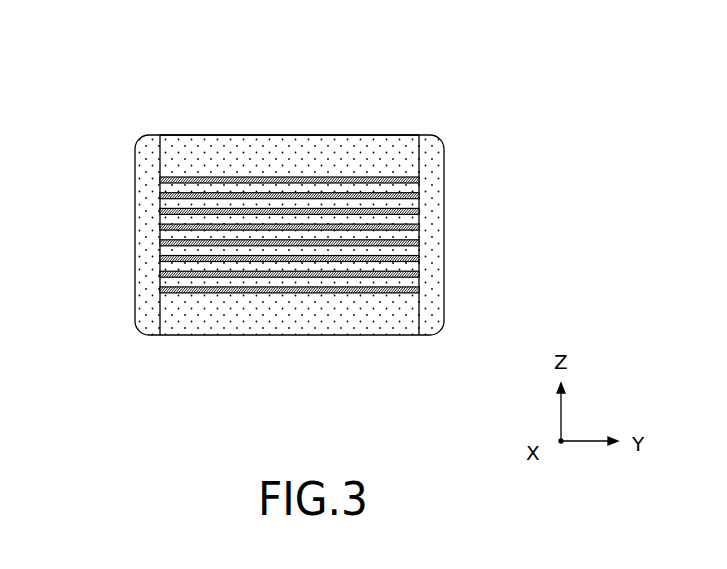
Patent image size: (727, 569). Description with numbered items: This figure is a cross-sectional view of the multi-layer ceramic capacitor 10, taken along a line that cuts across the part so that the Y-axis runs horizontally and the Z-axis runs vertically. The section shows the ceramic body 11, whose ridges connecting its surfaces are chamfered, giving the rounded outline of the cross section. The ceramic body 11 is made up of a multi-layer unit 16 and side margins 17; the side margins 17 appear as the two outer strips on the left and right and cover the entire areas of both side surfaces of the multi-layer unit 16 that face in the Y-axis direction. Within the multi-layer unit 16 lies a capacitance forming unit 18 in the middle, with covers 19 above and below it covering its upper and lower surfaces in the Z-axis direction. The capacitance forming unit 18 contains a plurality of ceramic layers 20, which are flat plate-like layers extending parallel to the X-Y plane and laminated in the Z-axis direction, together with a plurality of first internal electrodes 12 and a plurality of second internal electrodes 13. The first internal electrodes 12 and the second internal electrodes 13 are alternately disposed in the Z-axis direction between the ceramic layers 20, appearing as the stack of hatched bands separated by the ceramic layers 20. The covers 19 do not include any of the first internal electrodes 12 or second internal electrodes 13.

The multi-layer ceramic capacitor 10 is at (121, 99).
The ceramic body 11 is at (420, 98).
The first internal electrode 12 is at (197, 272).
The second internal electrode 13 is at (315, 287).
The multi-layer unit 16 is at (293, 126).
The side margin 17 is at (152, 237).
The capacitance forming unit 18 is at (308, 250).
The cover 19 is at (305, 170).
The ceramic layer 20 is at (419, 235).